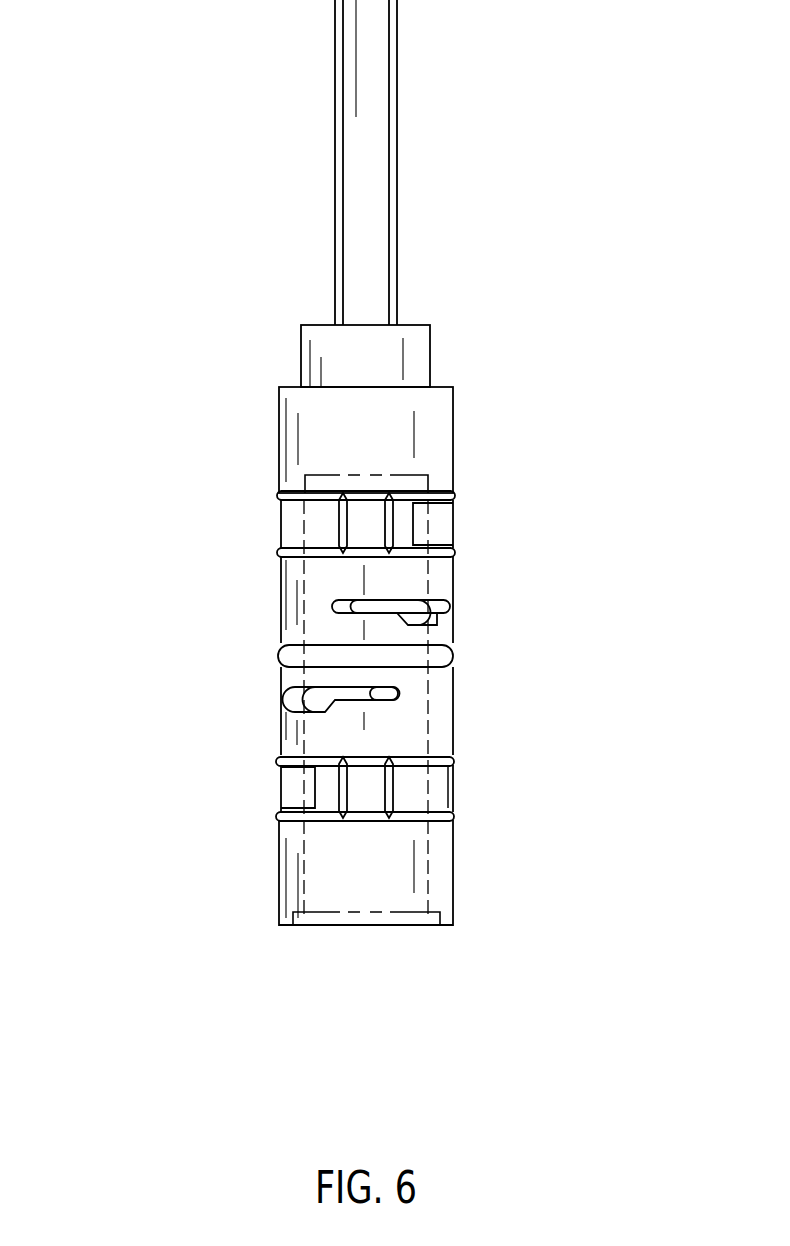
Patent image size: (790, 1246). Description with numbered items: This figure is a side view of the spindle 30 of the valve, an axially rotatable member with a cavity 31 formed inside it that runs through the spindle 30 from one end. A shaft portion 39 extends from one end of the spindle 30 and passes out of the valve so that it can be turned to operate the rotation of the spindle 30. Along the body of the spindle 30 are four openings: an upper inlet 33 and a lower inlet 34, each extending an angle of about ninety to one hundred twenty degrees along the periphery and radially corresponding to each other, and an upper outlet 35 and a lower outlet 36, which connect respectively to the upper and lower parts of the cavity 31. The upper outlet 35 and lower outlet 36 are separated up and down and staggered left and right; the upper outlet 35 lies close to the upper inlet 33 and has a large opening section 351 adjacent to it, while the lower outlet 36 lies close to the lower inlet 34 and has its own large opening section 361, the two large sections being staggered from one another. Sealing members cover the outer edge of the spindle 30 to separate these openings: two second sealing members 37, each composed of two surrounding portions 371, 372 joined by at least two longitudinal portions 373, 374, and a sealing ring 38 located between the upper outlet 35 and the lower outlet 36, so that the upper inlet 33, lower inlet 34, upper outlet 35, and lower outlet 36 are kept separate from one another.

The shaft portion 39 is at (373, 154).
The spindle 30 is at (428, 434).
The cavity 31 is at (424, 720).
The upper inlet 33 is at (435, 530).
The lower inlet 34 is at (285, 783).
The upper outlet 35 is at (368, 602).
The large opening section 351 is at (440, 612).
The lower outlet 36 is at (368, 695).
The large opening section 361 is at (283, 699).
The second sealing member 37 is at (115, 437).
The surrounding portion 371 is at (277, 493).
The surrounding portion 372 is at (277, 552).
The longitudinal portion 373 is at (343, 537).
The longitudinal portion 374 is at (387, 513).
The sealing ring 38 is at (295, 651).